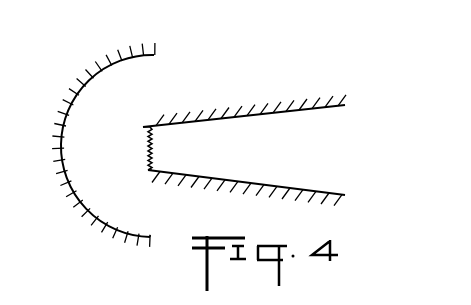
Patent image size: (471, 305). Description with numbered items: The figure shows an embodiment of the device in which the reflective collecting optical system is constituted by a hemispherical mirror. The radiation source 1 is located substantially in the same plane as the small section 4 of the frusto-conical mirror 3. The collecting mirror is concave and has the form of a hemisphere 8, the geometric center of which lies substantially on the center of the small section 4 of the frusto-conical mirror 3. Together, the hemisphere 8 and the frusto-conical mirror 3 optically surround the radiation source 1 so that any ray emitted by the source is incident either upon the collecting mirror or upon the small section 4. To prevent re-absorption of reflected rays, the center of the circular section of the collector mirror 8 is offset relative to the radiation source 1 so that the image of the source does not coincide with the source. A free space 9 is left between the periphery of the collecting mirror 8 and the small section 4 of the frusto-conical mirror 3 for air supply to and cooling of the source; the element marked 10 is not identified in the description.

The radiation source 1 is at (148, 152).
The frusto-conical mirror 3 is at (264, 112).
The small section of the frusto-conical mirror 4 is at (143, 127).
The hemisphere 8 is at (80, 97).
The free space 9 is at (130, 207).
The end of curved wall 10 is at (150, 237).